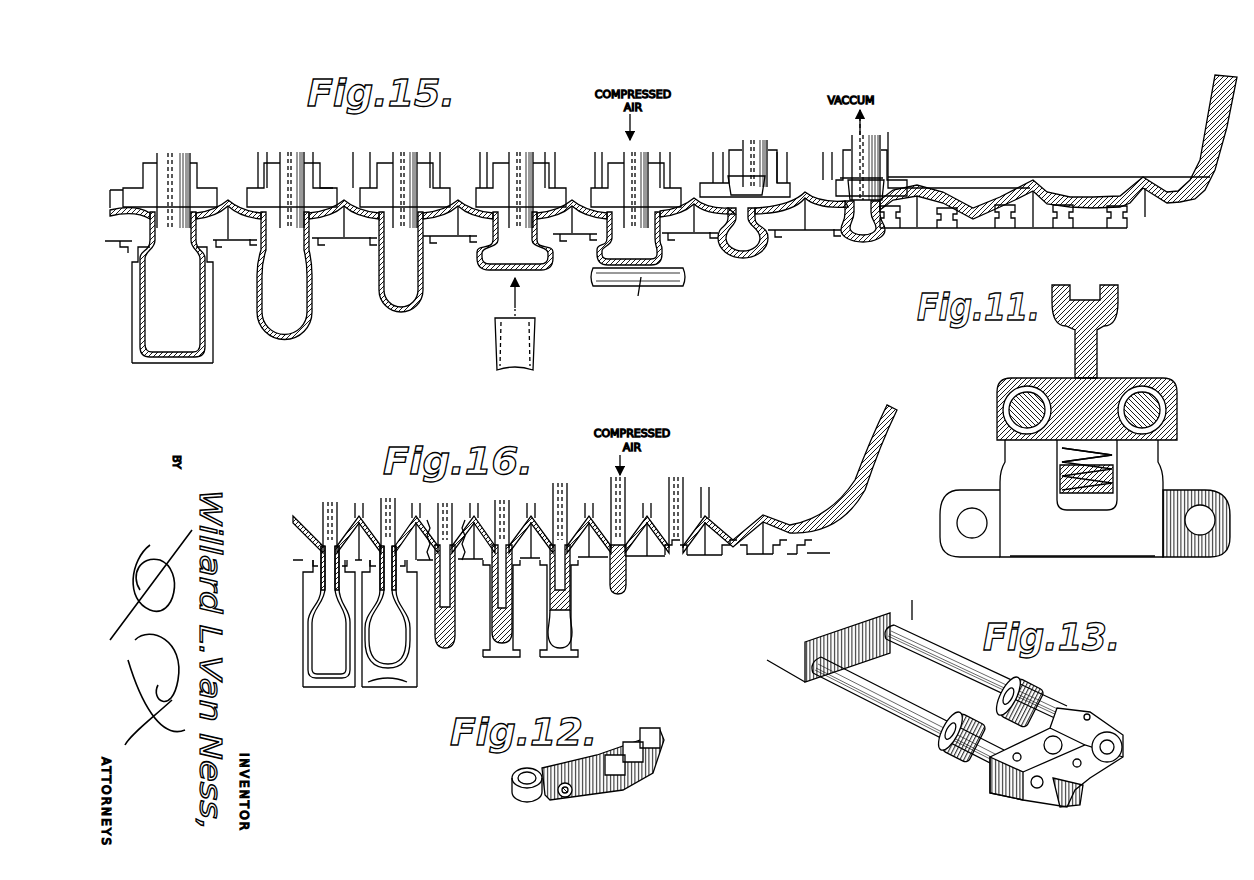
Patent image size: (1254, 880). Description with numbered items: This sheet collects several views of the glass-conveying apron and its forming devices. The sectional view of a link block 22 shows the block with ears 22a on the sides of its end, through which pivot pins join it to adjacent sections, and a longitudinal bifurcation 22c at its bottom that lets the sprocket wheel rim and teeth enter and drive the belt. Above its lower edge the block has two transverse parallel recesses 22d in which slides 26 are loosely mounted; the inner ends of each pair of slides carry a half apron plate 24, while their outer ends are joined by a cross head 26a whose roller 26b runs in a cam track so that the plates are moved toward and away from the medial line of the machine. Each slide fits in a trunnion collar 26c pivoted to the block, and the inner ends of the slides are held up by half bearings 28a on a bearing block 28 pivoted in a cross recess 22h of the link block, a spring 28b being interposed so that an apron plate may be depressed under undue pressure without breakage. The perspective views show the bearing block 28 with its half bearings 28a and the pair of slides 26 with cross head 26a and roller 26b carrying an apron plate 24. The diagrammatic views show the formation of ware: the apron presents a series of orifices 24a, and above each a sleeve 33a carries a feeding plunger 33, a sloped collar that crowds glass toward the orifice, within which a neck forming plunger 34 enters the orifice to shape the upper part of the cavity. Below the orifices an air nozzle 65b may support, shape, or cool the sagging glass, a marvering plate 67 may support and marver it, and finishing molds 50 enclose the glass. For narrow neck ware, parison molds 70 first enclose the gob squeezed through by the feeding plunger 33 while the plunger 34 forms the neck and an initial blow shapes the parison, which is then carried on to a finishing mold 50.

In FIG. 11, the link block 22 is at (1120, 379).
In FIG. 11, the ears 22a is at (965, 551).
In FIG. 11, the longitudinal bifurcation 22c is at (1062, 542).
In FIG. 11, the transverse parallel recesses 22d is at (1010, 428).
In FIG. 11, the cross recess 22h is at (1110, 512).
In FIG. 15, the apron plate 24 is at (355, 232).
In FIG. 13, the apron plate 24 is at (905, 614).
In FIG. 15, the orifices 24a is at (466, 199).
In FIG. 11, the slides 26 is at (1025, 405).
In FIG. 13, the slides 26 is at (925, 713).
In FIG. 13, the cross head 26a is at (1103, 724).
In FIG. 13, the roller 26b is at (1090, 794).
In FIG. 13, the trunnion collar 26c is at (1040, 690).
In FIG. 11, the bearing block 28 is at (1115, 480).
In FIG. 12, the bearing block 28 is at (551, 805).
In FIG. 12, the half bearings 28a is at (660, 734).
In FIG. 11, the spring 28b is at (1065, 455).
In FIG. 15, the feeding plunger 33 is at (252, 195).
In FIG. 15, the sleeve 33a is at (372, 165).
In FIG. 15, the neck forming plunger 34 is at (292, 157).
In FIG. 15, the finishing molds 50 is at (213, 343).
In FIG. 16, the finishing molds 50 is at (343, 692).
In FIG. 15, the air nozzle 65b is at (520, 340).
In FIG. 15, the marvering plate 67 is at (683, 279).
In FIG. 16, the parison molds 70 is at (578, 629).